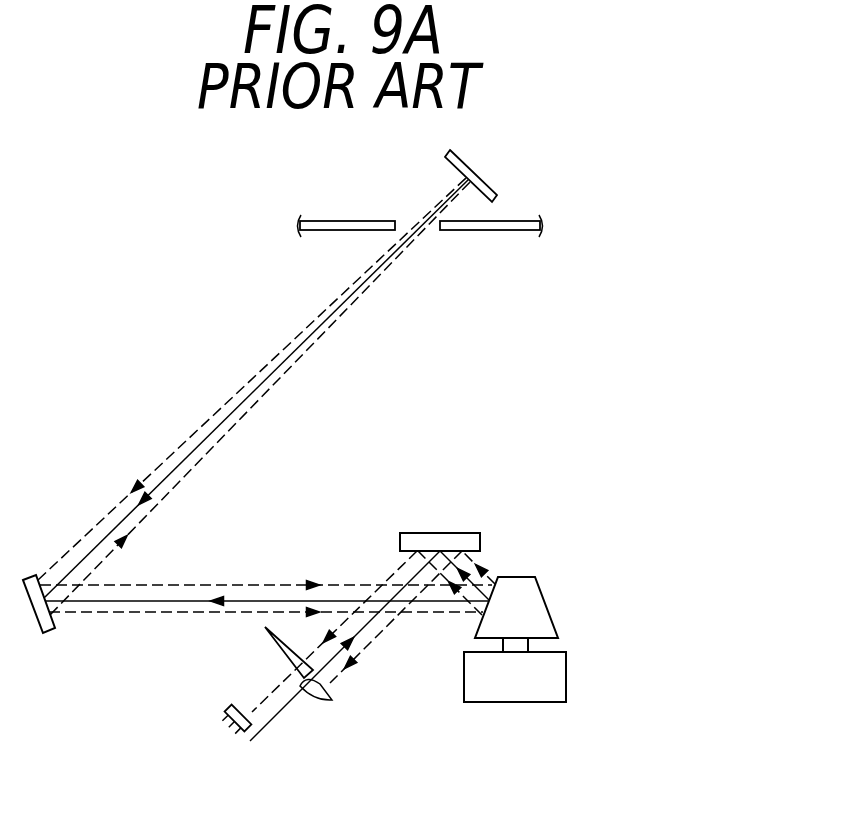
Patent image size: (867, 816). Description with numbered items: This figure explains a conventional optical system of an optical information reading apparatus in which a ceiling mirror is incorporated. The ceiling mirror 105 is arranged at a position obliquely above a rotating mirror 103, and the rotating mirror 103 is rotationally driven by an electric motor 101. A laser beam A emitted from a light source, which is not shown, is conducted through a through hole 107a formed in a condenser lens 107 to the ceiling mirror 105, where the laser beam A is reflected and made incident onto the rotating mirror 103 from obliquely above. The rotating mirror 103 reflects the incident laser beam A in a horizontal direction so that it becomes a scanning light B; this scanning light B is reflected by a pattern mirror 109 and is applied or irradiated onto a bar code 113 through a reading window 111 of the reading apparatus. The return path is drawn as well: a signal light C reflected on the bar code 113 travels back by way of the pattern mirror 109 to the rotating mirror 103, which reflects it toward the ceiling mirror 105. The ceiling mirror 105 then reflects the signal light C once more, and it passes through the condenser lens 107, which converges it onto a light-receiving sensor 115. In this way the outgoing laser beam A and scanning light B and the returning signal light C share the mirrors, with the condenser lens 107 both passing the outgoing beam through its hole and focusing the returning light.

The electric motor 101 is at (545, 703).
The rotating mirror 103 is at (527, 577).
The ceiling mirror 105 is at (445, 533).
The condenser lens 107 is at (277, 648).
The through hole 107a is at (303, 692).
The pattern mirror 109 is at (50, 635).
The reading window 111 is at (432, 228).
The bar code 113 is at (452, 168).
The light-receiving sensor 115 is at (228, 712).
The laser beam A is at (370, 625).
The scanning light B is at (335, 600).
The signal light C is at (198, 472).